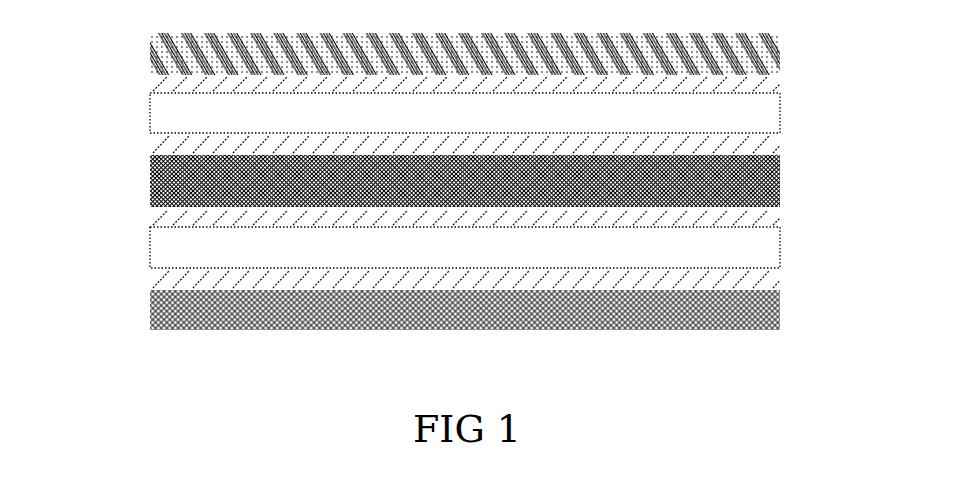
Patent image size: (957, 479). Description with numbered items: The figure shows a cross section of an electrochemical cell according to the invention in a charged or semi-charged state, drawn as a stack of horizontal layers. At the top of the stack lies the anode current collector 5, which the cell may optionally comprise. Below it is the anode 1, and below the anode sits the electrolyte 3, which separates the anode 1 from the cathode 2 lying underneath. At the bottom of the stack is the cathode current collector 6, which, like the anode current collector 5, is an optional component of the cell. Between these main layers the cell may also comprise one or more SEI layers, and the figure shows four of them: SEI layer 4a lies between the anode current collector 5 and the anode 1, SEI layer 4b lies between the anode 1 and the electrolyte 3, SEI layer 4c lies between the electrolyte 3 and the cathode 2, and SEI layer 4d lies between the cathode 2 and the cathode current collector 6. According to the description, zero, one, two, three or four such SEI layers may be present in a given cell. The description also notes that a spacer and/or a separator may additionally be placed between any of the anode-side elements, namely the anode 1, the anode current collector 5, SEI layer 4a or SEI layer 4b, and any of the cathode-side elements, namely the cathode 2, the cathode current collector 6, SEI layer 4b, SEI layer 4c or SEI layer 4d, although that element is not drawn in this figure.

The anode current collector 5 is at (152, 60).
The anode 1 is at (152, 123).
The electrolyte 3 is at (152, 187).
The cathode 2 is at (152, 247).
The cathode current collector 6 is at (152, 303).
The SEI layer 4a is at (794, 81).
The SEI layer 4b is at (788, 142).
The SEI layer 4c is at (792, 221).
The SEI layer 4d is at (792, 275).